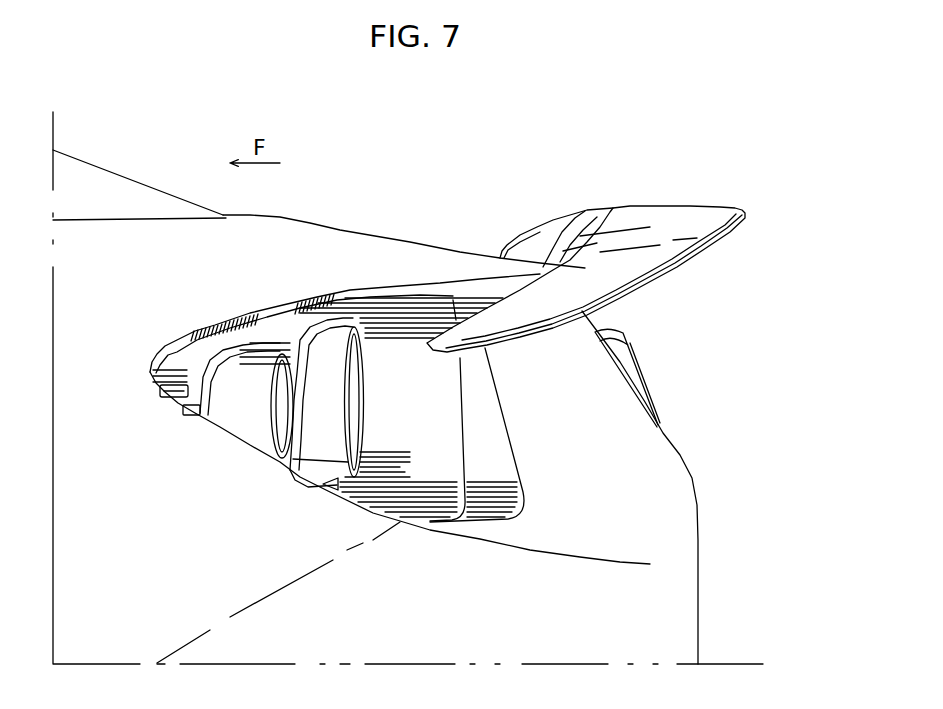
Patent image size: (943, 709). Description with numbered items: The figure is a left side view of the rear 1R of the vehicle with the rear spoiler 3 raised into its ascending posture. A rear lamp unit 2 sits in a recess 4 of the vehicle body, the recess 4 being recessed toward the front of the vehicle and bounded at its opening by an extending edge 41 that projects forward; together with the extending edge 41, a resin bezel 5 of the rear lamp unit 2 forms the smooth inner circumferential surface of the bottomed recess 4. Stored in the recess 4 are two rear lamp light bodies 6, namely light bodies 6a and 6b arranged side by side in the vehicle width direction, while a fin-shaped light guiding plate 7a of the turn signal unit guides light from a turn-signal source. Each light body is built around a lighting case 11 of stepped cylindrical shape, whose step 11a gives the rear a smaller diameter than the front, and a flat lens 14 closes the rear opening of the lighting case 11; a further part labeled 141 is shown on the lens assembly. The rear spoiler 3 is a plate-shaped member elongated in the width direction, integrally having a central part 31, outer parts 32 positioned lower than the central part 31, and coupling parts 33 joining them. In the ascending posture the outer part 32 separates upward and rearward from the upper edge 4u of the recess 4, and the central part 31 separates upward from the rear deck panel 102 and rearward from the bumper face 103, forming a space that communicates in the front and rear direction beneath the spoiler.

The rear of the vehicle 1R is at (467, 212).
The rear lamp unit 2 is at (389, 419).
The rear spoiler 3 is at (599, 231).
The central part 31 is at (718, 205).
The outer part 32 is at (593, 310).
The coupling part 33 is at (512, 243).
The recess 4 is at (389, 419).
The upper edge of the recess 4u is at (170, 338).
The extending edge 41 is at (514, 468).
The bezel 5 is at (457, 462).
The rear lamp light body 6 is at (358, 332).
The rear lamp light body 6a is at (358, 402).
The rear lamp light body 6b is at (298, 397).
The fin-shaped light guiding plate 7a is at (173, 399).
The lighting case 11 is at (266, 391).
The step 11a is at (312, 303).
The lens 14 is at (288, 419).
The holder flange 141 is at (287, 442).
The rear deck panel 102 is at (406, 241).
The bumper face 103 is at (670, 440).